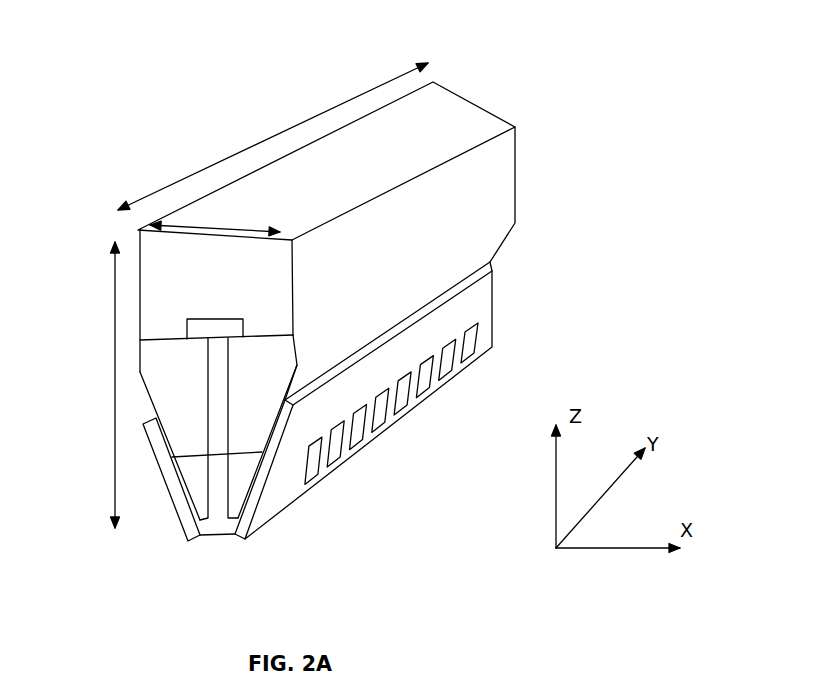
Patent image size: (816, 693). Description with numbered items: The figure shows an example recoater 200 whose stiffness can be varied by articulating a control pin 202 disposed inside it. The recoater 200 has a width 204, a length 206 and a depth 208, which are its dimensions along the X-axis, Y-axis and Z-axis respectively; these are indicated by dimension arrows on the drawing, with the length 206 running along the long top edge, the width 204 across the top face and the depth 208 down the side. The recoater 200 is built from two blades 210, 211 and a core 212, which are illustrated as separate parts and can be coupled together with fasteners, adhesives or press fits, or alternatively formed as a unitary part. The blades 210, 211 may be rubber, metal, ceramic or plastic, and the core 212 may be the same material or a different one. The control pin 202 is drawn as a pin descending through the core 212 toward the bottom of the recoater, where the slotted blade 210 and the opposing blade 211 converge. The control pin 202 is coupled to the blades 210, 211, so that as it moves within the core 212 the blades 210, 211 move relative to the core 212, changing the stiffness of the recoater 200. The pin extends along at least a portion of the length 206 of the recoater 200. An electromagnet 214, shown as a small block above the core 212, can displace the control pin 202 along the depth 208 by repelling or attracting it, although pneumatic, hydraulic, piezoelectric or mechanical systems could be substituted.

The recoater 200 is at (547, 56).
The control pin 202 is at (220, 470).
The width 204 is at (218, 225).
The length 206 is at (247, 148).
The depth 208 is at (113, 343).
The blade 210 is at (494, 317).
The blade 211 is at (198, 541).
The core 212 is at (295, 330).
The electromagnet 214 is at (190, 318).